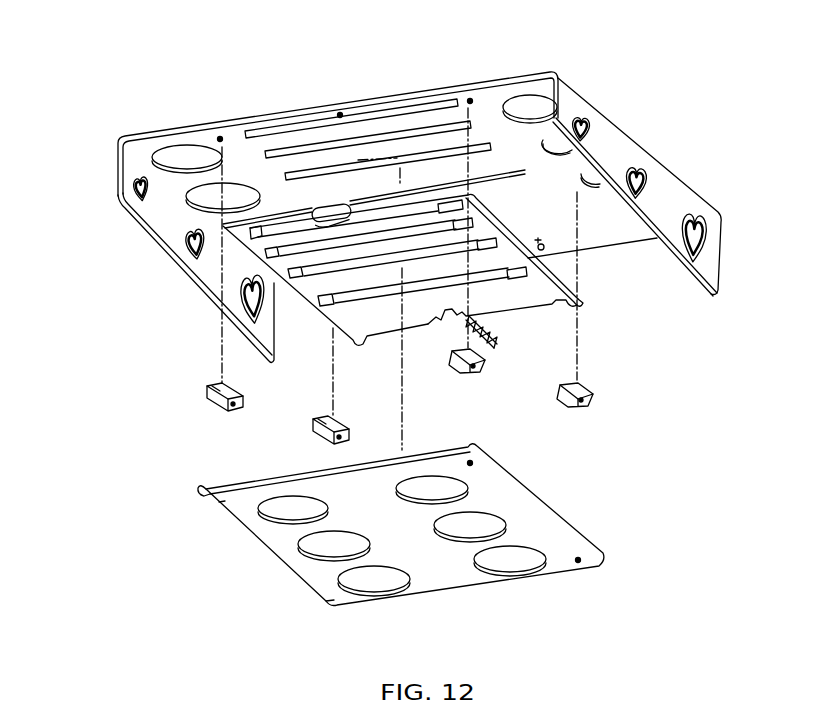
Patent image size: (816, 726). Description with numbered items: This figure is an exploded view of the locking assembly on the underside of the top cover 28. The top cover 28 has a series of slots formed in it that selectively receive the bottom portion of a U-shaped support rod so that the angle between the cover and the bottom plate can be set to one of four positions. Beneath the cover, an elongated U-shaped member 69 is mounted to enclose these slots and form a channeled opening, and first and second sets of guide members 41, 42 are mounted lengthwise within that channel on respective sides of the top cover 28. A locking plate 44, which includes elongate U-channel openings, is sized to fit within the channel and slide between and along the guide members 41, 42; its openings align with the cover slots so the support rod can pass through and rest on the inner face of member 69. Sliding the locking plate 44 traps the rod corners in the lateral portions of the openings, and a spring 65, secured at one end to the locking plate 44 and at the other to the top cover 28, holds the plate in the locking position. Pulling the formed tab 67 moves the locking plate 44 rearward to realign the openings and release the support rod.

The top cover 28 is at (432, 92).
The formed tab 67 is at (312, 205).
The locking plate 44 is at (553, 275).
The spring 65 is at (497, 336).
The first set of guide members 41 is at (315, 431).
The second set of guide members 42 is at (593, 401).
The elongated U-shaped member 69 is at (563, 510).